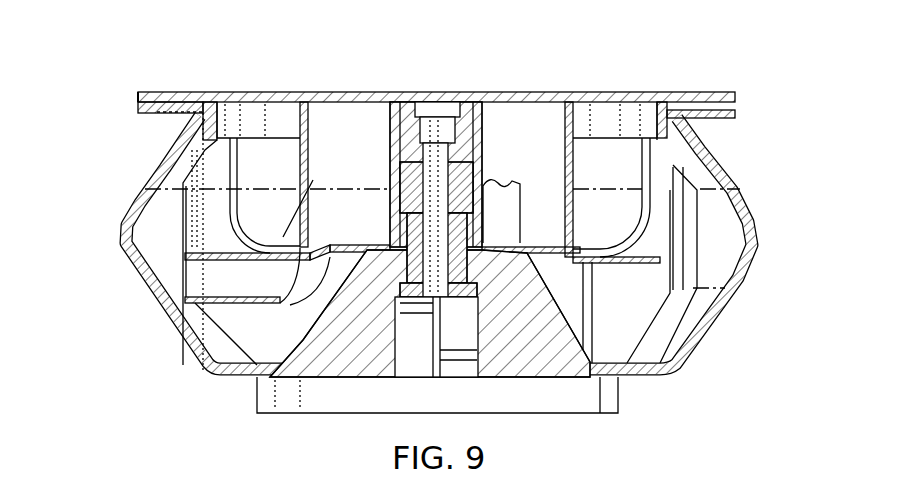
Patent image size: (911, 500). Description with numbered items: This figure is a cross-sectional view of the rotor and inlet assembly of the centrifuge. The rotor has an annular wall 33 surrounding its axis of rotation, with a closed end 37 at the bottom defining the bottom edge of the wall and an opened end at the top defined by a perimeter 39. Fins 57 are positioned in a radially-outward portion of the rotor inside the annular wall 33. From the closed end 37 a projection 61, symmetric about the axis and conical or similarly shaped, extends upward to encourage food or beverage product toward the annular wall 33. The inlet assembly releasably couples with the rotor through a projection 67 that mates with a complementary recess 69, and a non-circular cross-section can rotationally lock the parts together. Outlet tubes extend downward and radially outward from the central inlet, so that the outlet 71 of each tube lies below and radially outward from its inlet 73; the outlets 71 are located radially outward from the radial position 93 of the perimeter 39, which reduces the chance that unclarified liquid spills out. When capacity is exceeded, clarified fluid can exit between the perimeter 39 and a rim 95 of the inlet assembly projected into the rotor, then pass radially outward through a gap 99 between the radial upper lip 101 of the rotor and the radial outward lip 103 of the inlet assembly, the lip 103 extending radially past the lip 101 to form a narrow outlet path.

The annular wall 33 is at (122, 200).
The closed end 37 is at (630, 372).
The perimeter 39 is at (203, 110).
The fins 57 is at (188, 233).
The projection 61 is at (550, 313).
The projection 67 is at (410, 187).
The recess 69 is at (398, 203).
The outlet 71 is at (183, 293).
The inlet 73 is at (497, 203).
The radial position 93 is at (203, 330).
The rim 95 is at (212, 108).
The gap 99 is at (157, 105).
The radial upper lip 101 is at (178, 113).
The radial outward lip 103 is at (138, 93).